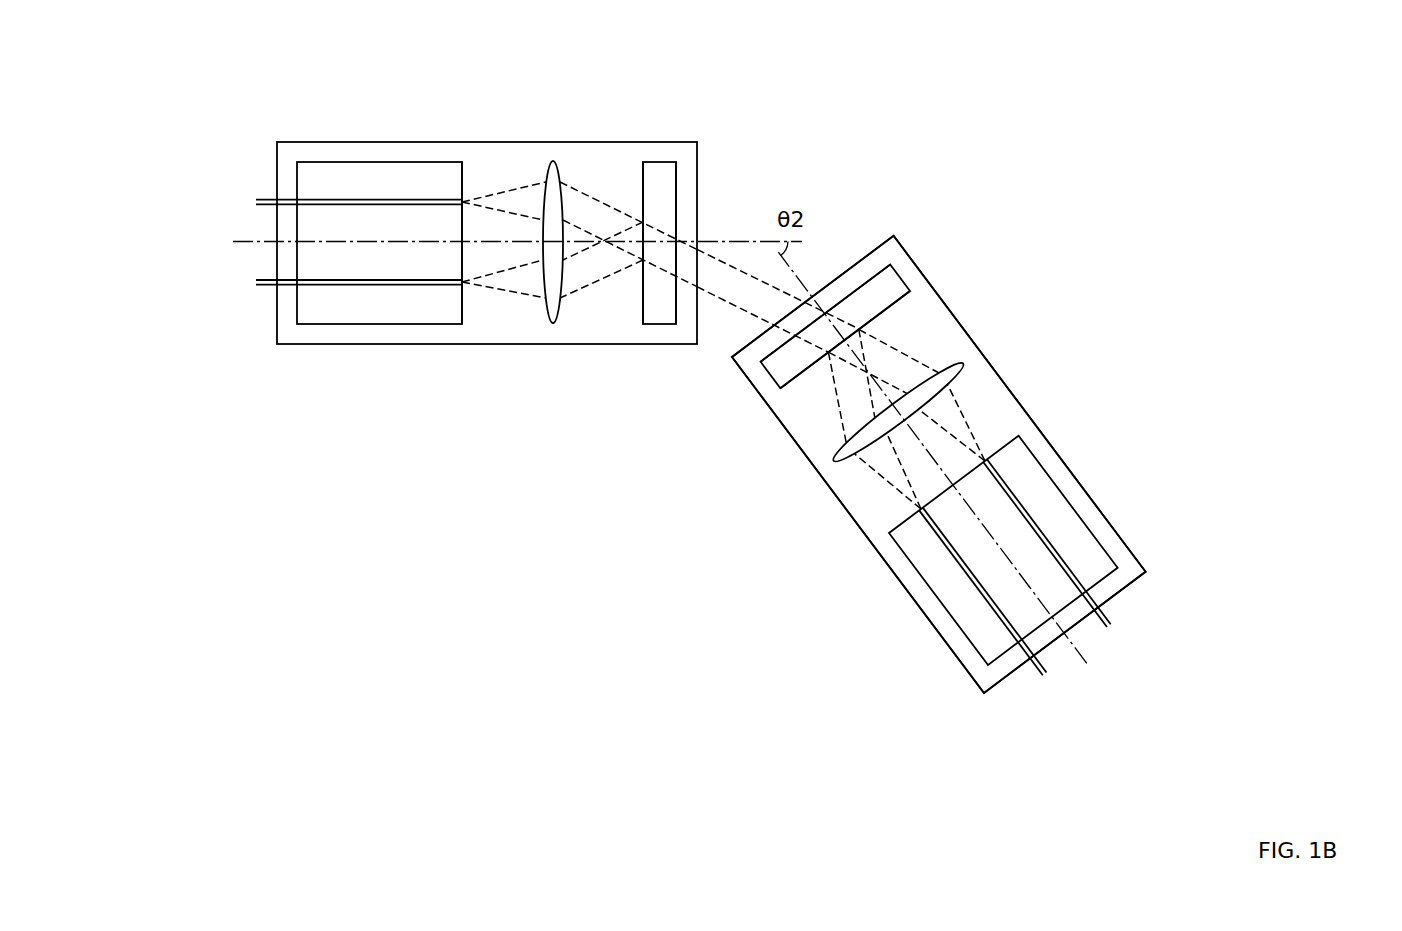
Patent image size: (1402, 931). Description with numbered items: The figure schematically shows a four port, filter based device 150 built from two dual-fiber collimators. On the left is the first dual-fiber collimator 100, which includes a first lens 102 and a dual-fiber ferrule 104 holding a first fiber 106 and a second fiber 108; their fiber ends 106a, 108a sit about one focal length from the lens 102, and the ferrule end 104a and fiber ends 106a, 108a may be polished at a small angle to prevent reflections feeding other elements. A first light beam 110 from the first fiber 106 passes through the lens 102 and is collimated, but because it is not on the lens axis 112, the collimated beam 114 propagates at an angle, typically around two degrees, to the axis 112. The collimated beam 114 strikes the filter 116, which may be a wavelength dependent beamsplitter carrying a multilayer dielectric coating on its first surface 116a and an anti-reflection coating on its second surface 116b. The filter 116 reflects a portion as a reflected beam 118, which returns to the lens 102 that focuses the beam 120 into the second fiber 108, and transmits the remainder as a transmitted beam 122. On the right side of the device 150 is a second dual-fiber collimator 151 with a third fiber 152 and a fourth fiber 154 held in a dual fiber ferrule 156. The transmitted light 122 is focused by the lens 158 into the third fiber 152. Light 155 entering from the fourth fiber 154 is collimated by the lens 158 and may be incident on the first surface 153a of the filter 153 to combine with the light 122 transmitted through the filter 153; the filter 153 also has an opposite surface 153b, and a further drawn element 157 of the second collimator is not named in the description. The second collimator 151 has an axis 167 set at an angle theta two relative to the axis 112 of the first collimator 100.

The dual-fiber collimator 100 is at (317, 140).
The first lens 102 is at (552, 162).
The dual-fiber ferrule 104 is at (340, 325).
The ferrule end 104a is at (422, 198).
The first fiber 106 is at (265, 198).
The first fiber end 106a is at (467, 138).
The second fiber 108 is at (267, 288).
The second fiber end 108a is at (435, 333).
The first light beam 110 is at (502, 188).
The lens axis 112 is at (245, 240).
The collimated beam 114 is at (603, 202).
The filter 116 is at (663, 162).
The first surface 116a is at (643, 318).
The second surface 116b is at (670, 327).
The reflected beam 118 is at (575, 295).
The focused beam 120 is at (513, 297).
The transmitted beam 122 is at (740, 263).
The four port filter based device 150 is at (958, 119).
The second DFC 151 is at (1070, 474).
The third fiber 152 is at (1110, 620).
The filter 153 is at (897, 274).
The first surface 153a is at (788, 380).
The second filter outer surface 153b is at (768, 357).
The fourth fiber 154 is at (1032, 667).
The light from fourth fiber 155 is at (882, 480).
The dual fiber ferrule 156 is at (1028, 440).
The second lens 157 is at (963, 403).
The lens 158 is at (960, 365).
The axis 167 is at (1085, 667).